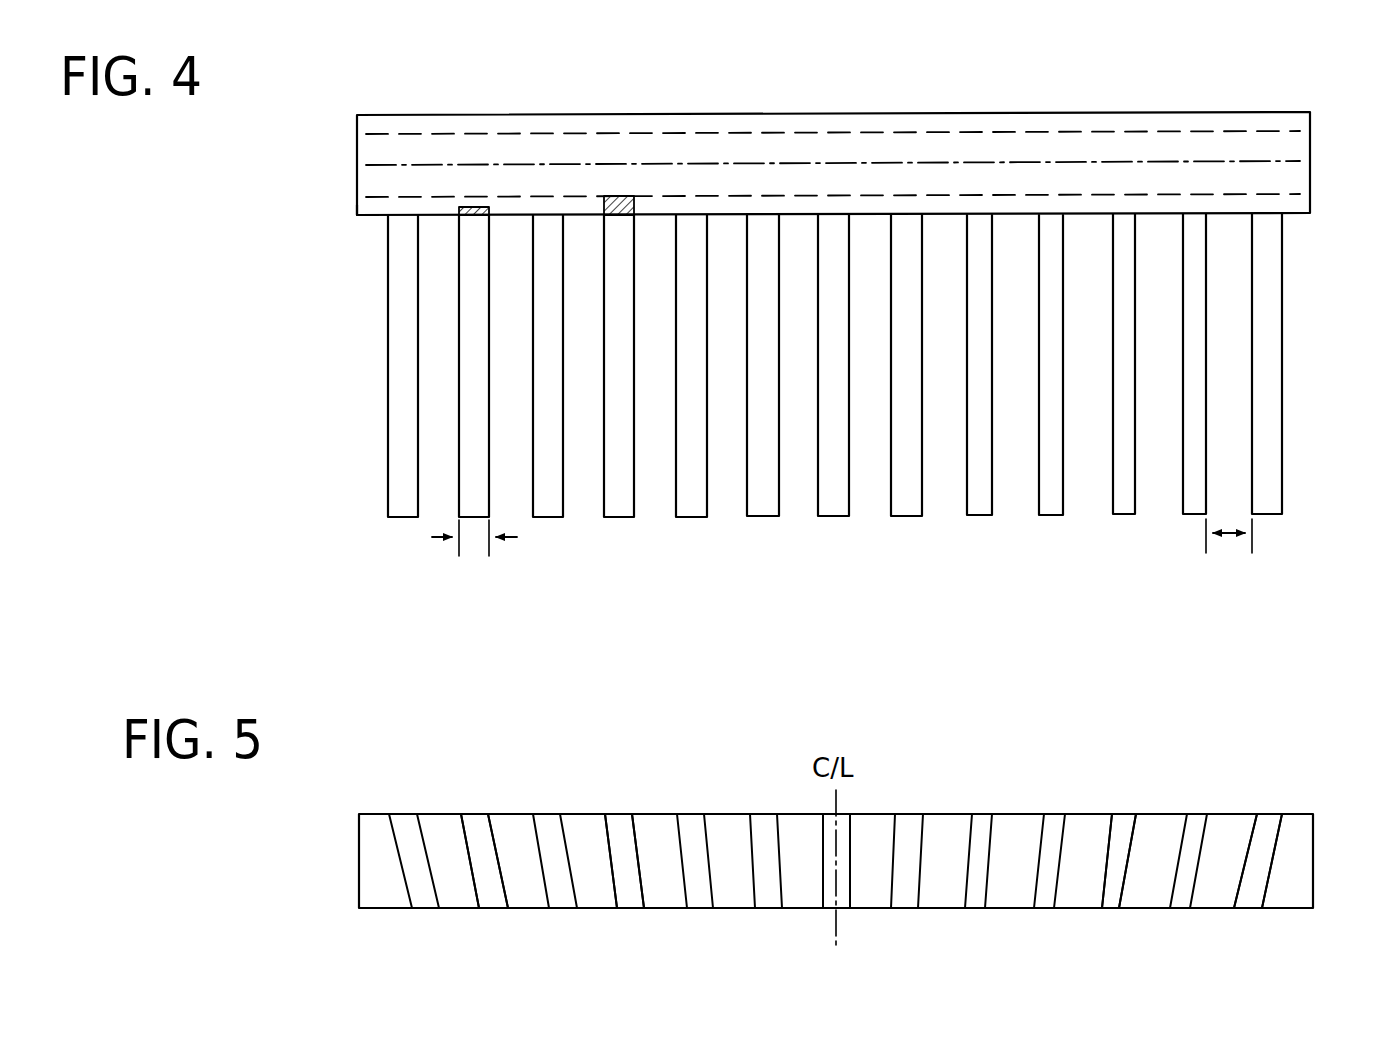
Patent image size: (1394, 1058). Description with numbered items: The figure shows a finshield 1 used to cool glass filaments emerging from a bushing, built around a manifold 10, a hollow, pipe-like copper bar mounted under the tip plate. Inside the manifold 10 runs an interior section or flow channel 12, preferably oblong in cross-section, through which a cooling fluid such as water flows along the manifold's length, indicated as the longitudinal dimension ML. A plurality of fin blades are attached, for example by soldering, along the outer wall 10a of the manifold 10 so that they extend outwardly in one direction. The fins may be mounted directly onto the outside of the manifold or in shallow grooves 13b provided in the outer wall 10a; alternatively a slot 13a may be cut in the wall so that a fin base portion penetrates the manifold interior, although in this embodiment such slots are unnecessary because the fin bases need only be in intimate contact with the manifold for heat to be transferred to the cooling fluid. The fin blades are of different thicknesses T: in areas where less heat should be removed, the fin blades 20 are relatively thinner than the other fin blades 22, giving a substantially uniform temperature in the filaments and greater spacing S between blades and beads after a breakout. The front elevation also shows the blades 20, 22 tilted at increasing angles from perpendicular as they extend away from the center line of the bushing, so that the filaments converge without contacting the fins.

In FIG. 4, the finshield 1 is at (356, 311).
In FIG. 4, the manifold 10 is at (776, 113).
In FIG. 4, the manifold outer wall 10a is at (362, 216).
In FIG. 4, the flow channel 12 is at (1300, 146).
In FIG. 4, the manifold length ML is at (1297, 166).
In FIG. 4, the slot 13a is at (620, 196).
In FIG. 4, the shallow groove 13b is at (473, 207).
In FIG. 4, the thinner fin blade 20 is at (1050, 516).
In FIG. 5, the thinner fin blade 20 is at (1125, 822).
In FIG. 4, the fin blade 22 is at (690, 518).
In FIG. 5, the fin blade 22 is at (478, 823).
In FIG. 4, the fin blade thickness T is at (474, 540).
In FIG. 4, the tooth spacing S is at (1230, 536).